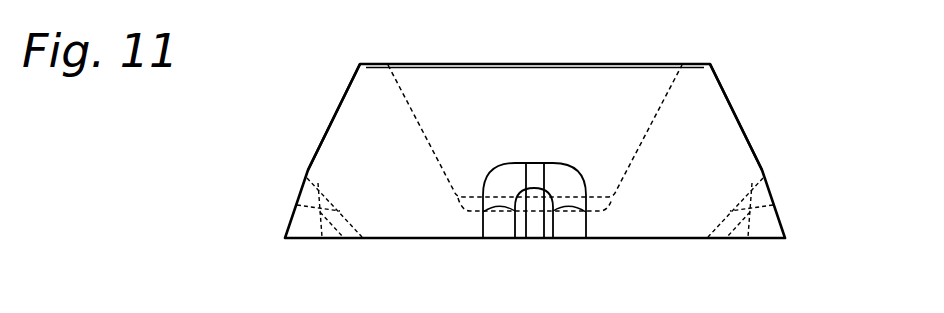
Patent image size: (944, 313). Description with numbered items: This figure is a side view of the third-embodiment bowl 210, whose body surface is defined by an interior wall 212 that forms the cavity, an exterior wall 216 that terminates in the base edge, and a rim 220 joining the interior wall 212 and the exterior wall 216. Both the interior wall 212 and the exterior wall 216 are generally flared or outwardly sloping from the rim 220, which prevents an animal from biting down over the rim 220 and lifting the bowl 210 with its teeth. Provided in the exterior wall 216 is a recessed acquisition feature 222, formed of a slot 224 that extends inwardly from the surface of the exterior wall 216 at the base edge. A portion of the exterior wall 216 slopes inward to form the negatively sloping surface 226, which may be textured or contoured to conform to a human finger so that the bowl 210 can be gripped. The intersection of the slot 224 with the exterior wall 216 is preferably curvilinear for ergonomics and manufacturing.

The bowl 210 is at (755, 85).
The interior wall 212 is at (413, 101).
The exterior wall 216 is at (328, 121).
The rim 220 is at (681, 64).
The recessed acquisition feature 222 is at (797, 179).
The slot 224 is at (337, 210).
The negatively sloping surface 226 is at (733, 209).